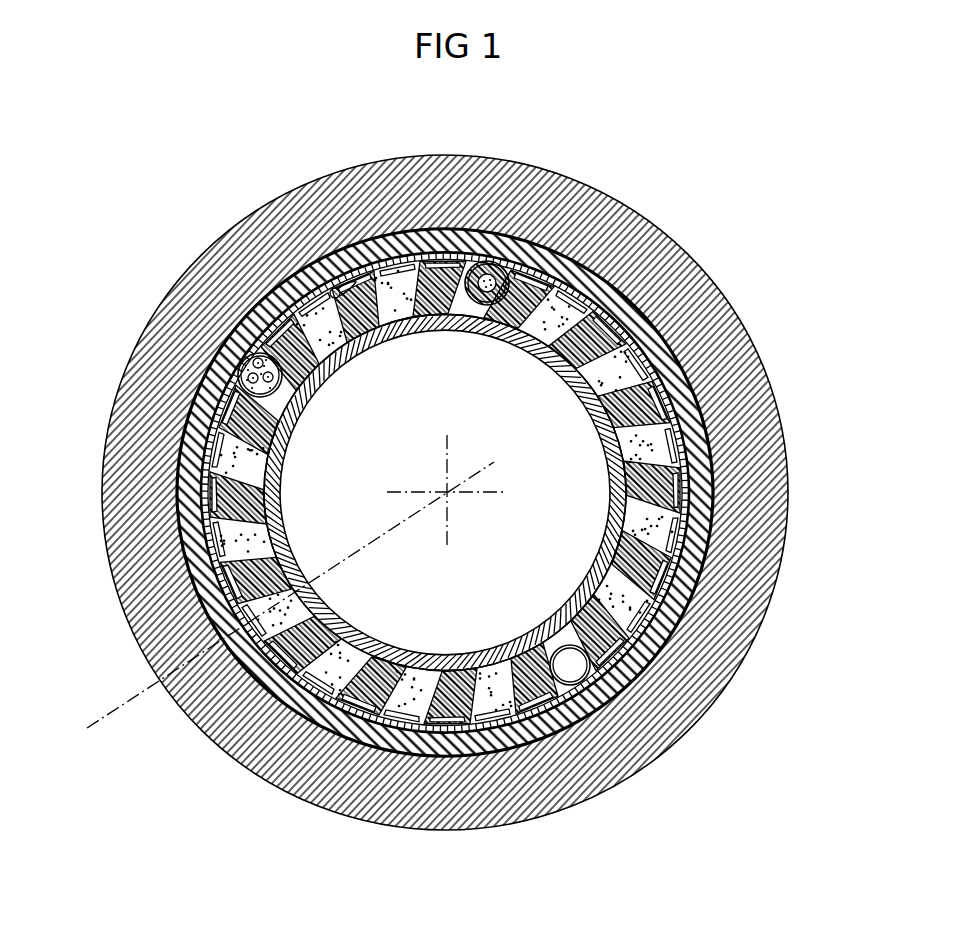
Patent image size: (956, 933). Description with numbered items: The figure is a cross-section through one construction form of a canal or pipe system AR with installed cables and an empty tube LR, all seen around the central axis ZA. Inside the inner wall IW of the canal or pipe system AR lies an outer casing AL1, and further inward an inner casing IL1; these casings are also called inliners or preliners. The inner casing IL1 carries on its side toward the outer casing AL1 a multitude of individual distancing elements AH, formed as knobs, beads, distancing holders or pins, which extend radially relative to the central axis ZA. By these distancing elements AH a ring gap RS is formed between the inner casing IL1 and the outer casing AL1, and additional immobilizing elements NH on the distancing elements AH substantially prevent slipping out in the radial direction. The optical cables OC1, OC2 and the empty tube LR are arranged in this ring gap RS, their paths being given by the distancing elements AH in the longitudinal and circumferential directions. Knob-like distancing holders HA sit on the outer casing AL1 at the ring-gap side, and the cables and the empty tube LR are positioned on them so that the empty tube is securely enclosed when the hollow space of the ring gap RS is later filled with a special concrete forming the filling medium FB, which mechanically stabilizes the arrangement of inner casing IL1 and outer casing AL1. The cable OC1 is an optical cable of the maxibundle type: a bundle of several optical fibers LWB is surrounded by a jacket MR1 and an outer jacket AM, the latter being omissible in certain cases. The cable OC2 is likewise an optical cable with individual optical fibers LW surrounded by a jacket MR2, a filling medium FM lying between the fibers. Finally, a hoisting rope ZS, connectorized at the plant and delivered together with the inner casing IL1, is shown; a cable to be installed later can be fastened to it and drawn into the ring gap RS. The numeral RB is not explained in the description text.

The canal or pipe system AR is at (774, 534).
The inner wall IW is at (652, 295).
The outer casing AL1 is at (704, 447).
The distancing elements AH is at (575, 390).
The immobilizing elements NH is at (530, 342).
The inner casing IL1 is at (622, 488).
The ring gap RS is at (630, 634).
The distancing holders HA is at (577, 703).
The filling medium FB is at (234, 535).
The filling medium FM is at (287, 408).
The bundle of optical fibers LWB is at (478, 328).
The optical fibers LW is at (303, 393).
The jacket MR1 is at (444, 318).
The inner ring RB is at (312, 612).
The optical cable OC1 is at (476, 264).
The outer jacket AM is at (489, 275).
The optical cable OC2 is at (236, 348).
The jacket MR2 is at (262, 376).
The empty tube LR is at (560, 652).
The hoisting rope ZS is at (322, 292).
The central axis ZA is at (446, 491).